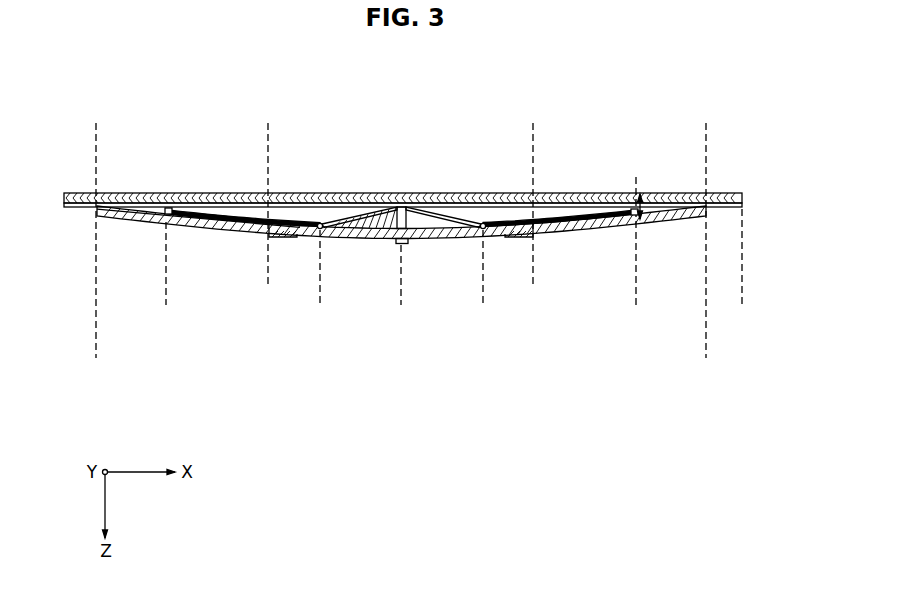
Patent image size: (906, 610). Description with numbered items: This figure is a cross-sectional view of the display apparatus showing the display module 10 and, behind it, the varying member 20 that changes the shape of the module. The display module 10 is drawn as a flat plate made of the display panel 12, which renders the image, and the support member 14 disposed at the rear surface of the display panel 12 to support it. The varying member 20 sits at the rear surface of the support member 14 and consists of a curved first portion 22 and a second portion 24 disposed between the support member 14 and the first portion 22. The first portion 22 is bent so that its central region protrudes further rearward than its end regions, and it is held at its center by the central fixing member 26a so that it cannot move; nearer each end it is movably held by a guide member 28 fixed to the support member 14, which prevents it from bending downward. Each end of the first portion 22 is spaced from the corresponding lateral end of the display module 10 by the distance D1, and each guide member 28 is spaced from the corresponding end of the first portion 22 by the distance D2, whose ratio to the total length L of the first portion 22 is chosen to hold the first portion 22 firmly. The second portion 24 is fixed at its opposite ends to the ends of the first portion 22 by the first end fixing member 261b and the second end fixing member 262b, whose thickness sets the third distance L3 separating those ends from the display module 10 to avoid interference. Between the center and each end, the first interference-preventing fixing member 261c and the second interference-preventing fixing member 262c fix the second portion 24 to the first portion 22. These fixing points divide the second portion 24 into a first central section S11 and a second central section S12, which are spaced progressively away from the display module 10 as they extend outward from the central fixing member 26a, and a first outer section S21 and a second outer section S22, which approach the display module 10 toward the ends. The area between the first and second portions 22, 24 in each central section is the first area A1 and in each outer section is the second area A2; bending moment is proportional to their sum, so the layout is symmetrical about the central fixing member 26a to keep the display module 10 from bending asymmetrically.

The display module 10 is at (435, 190).
The display panel 12 is at (738, 194).
The support member 14 is at (419, 211).
The varying member 20 is at (355, 246).
The first portion 22 is at (122, 211).
The second portion 24 is at (190, 219).
The central fixing member 26a is at (401, 206).
The guide member 28 is at (283, 226).
The first end fixing member 261b is at (168, 208).
The first interference-preventing fixing member 261c is at (322, 222).
The second end fixing member 262b is at (634, 209).
The second interference-preventing fixing member 262c is at (483, 222).
The first area A1 is at (377, 226).
The second area A2 is at (223, 217).
The third distance L3 is at (642, 219).
The distance between first portion end and display module lateral end D1 is at (706, 298).
The guide member spacing distance D2 is at (268, 130).
The first central section S11 is at (401, 298).
The second central section S12 is at (483, 298).
The first outer section S21 is at (166, 298).
The second outer section S22 is at (636, 298).
The total length of the first portion L is at (96, 350).